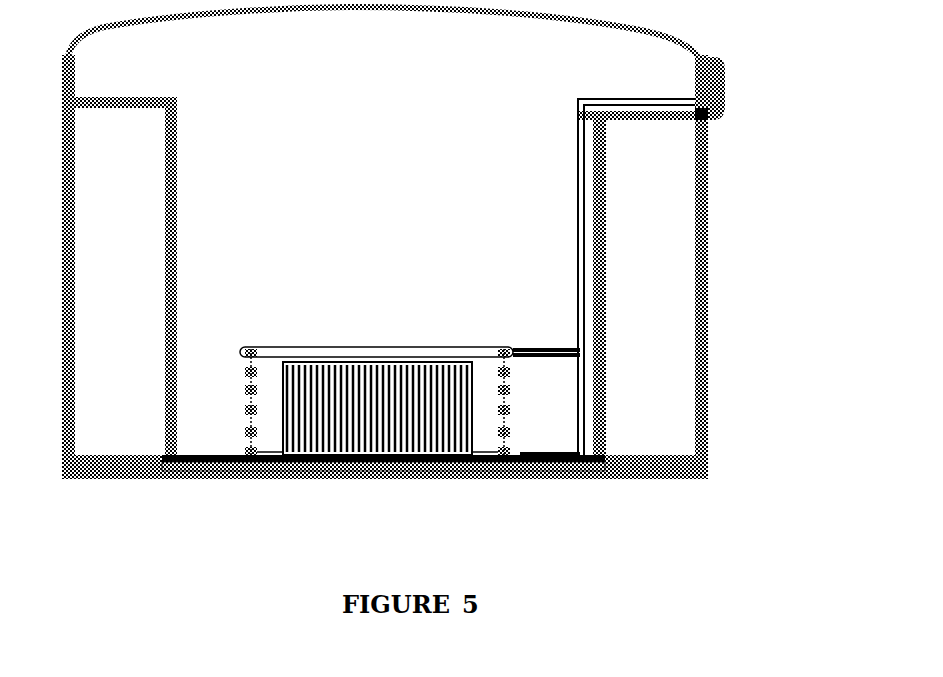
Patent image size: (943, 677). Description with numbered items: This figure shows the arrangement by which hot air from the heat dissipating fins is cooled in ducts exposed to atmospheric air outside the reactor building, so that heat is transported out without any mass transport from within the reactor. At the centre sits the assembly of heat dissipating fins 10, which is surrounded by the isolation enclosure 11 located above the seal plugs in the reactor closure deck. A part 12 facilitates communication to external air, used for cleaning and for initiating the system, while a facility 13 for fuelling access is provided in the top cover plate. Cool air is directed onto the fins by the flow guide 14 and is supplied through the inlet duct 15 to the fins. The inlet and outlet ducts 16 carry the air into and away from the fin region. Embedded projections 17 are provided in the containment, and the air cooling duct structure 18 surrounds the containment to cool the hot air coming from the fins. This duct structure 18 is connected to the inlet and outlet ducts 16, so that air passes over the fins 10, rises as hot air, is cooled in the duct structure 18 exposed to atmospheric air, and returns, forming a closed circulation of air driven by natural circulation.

The assembly of heat dissipating fins 10 is at (377, 350).
The isolation enclosure 11 is at (242, 414).
The communication to external air 12 is at (278, 359).
The fuelling access facility 13 is at (313, 458).
The flow guide 14 is at (480, 454).
The inlet duct 15 is at (522, 462).
The inlet and outlet ducts 16 is at (586, 301).
The embedded projections 17 is at (710, 124).
The air cooling duct structure 18 is at (722, 82).